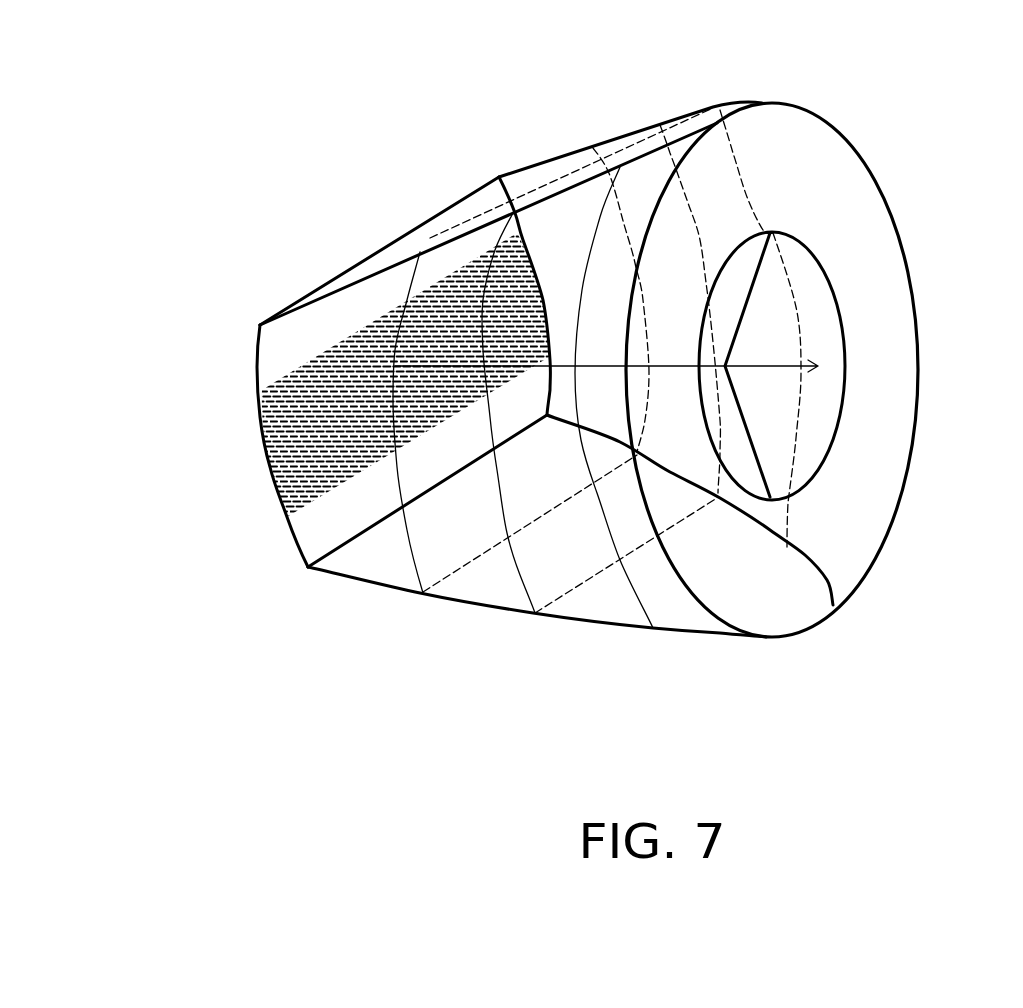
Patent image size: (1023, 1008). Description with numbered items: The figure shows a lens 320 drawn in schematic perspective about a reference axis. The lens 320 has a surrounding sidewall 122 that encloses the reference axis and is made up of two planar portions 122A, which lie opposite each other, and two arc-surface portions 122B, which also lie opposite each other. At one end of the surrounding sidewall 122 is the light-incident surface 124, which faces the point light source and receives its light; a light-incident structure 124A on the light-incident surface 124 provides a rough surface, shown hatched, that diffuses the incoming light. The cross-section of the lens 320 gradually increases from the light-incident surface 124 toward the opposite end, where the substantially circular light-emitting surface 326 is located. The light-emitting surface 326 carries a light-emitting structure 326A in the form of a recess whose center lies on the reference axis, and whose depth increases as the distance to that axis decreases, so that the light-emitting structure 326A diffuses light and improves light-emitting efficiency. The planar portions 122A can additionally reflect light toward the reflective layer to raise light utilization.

The lens 320 is at (956, 690).
The light-emitting surface 326 is at (875, 247).
The light-emitting structure 326A is at (803, 246).
The surrounding sidewall 122 is at (592, 687).
The planar portions 122A is at (533, 183).
The arc-surface portions 122B is at (742, 157).
The light-incident surface 124 is at (320, 528).
The light-incident structure 124A is at (290, 370).